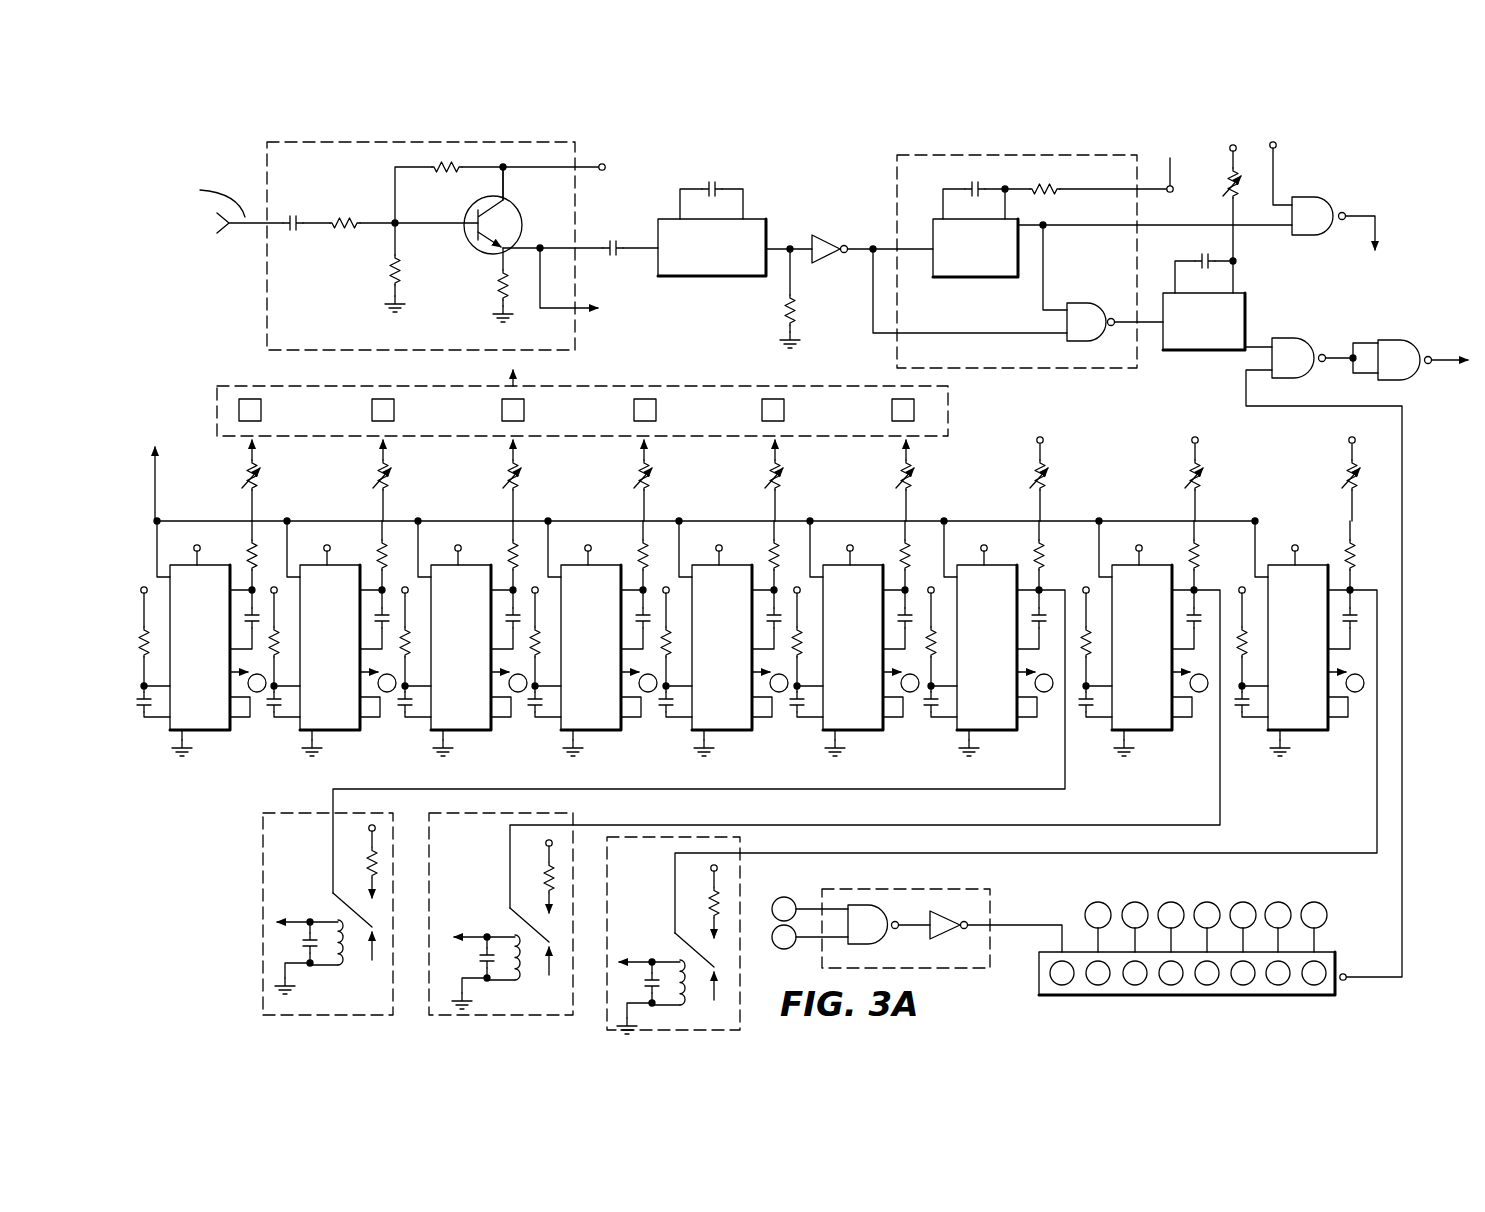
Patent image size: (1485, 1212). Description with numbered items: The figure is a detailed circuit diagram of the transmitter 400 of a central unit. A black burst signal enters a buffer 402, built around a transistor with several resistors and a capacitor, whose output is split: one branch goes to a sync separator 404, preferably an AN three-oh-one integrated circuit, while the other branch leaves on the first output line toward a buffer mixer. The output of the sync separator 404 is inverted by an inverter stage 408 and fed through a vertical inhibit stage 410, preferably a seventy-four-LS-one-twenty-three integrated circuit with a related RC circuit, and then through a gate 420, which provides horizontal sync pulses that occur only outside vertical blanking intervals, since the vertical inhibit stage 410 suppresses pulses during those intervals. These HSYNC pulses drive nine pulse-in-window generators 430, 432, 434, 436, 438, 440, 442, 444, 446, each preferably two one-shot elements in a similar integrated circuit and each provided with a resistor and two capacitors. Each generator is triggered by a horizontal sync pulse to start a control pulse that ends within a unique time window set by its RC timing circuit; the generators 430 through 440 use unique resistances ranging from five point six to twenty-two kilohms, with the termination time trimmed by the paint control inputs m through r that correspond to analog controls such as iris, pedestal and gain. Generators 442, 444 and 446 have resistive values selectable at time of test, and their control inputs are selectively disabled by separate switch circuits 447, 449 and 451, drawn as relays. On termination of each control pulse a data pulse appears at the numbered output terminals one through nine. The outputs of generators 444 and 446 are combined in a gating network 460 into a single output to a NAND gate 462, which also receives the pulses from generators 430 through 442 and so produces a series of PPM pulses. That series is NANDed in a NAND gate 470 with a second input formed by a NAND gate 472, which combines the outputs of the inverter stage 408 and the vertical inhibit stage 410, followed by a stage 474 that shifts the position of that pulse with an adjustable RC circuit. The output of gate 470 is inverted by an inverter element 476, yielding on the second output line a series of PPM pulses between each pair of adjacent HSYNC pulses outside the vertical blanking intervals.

The transmitter 400 is at (178, 290).
The buffer 402 is at (578, 143).
The sync separator 404 is at (766, 220).
The inverter stage 408 is at (837, 262).
The vertical inhibit stage 410 is at (961, 278).
The gate 420 is at (1308, 198).
The pulse-in-window generator 430 is at (201, 637).
The pulse-in-window generator 432 is at (331, 637).
The pulse-in-window generator 434 is at (462, 637).
The pulse-in-window generator 436 is at (592, 637).
The pulse-in-window generator 438 is at (723, 637).
The pulse-in-window generator 440 is at (854, 637).
The pulse-in-window generator 442 is at (988, 637).
The pulse-in-window generator 444 is at (1143, 637).
The pulse-in-window generator 446 is at (1299, 637).
The switch circuit 447 is at (261, 834).
The switch circuit 449 is at (468, 1019).
The switch circuit 451 is at (606, 1004).
The gating network 460 is at (985, 873).
The NAND gate 462 is at (1115, 997).
The NAND gate 470 is at (1290, 339).
The NAND gate 472 is at (1077, 303).
The stage 474 is at (1248, 312).
The inverter element 476 is at (1400, 341).